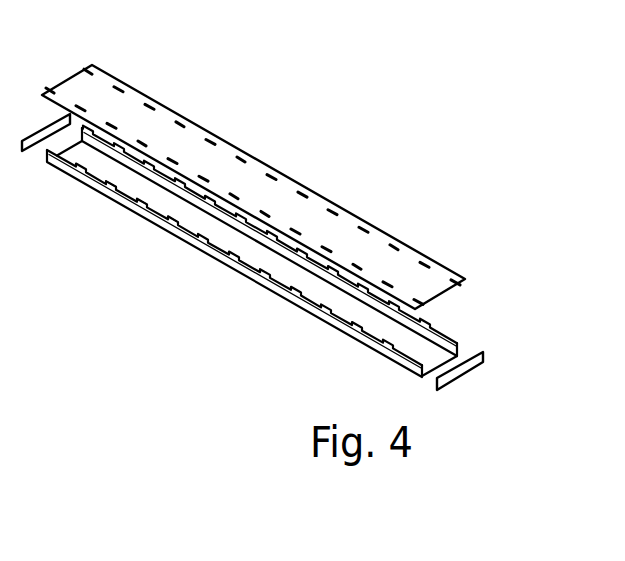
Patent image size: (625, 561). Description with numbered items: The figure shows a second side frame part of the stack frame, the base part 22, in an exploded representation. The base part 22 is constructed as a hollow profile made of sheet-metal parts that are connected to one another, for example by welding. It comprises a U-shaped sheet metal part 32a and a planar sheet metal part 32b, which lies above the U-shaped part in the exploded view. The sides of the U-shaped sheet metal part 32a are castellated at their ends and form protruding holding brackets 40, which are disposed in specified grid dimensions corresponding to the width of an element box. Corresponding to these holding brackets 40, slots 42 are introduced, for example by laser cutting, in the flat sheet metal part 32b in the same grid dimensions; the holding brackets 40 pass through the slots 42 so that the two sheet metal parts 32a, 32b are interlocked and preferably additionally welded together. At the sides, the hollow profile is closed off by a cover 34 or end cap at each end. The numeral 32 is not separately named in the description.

The base part 22 is at (277, 148).
The rail 32 is at (35, 136).
The U-shaped sheet metal part 32a is at (297, 293).
The planar sheet metal part 32b is at (368, 250).
The cover 34 is at (460, 370).
The holding brackets 40 is at (170, 218).
The slots 42 is at (147, 104).